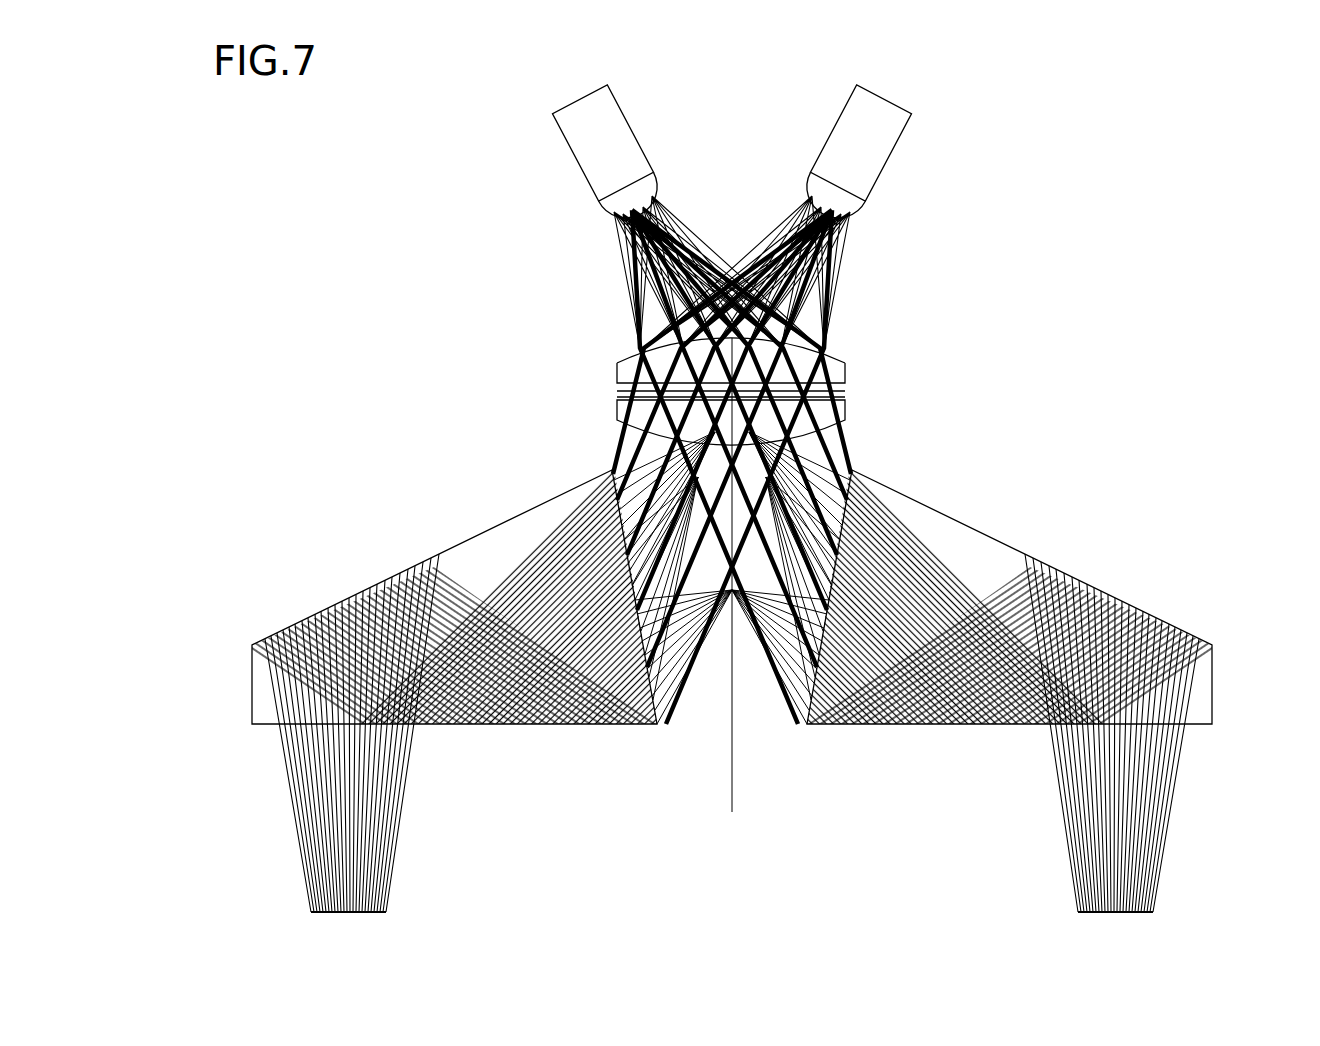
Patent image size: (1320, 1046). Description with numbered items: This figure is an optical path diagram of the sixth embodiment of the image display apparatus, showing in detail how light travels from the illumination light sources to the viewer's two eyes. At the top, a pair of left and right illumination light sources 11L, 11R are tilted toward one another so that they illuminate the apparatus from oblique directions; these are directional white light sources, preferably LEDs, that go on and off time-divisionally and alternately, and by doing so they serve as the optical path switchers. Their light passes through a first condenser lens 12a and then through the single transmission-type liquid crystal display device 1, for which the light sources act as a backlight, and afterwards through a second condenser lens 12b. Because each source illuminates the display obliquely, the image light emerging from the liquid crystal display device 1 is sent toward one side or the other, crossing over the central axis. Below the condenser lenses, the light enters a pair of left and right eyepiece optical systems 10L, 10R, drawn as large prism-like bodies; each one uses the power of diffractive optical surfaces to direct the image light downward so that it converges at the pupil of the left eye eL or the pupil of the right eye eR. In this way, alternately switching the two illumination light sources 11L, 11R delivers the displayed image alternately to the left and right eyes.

The liquid crystal display device 1 is at (847, 392).
The left eyepiece optical system 10L is at (503, 527).
The right eyepiece optical system 10R is at (993, 542).
The left illumination light source 11L is at (895, 145).
The right illumination light source 11R is at (556, 142).
The first condenser lens 12a is at (847, 373).
The second condenser lens 12b is at (845, 405).
The pupil of the left eye eL is at (392, 915).
The pupil of the right eye eR is at (1158, 913).